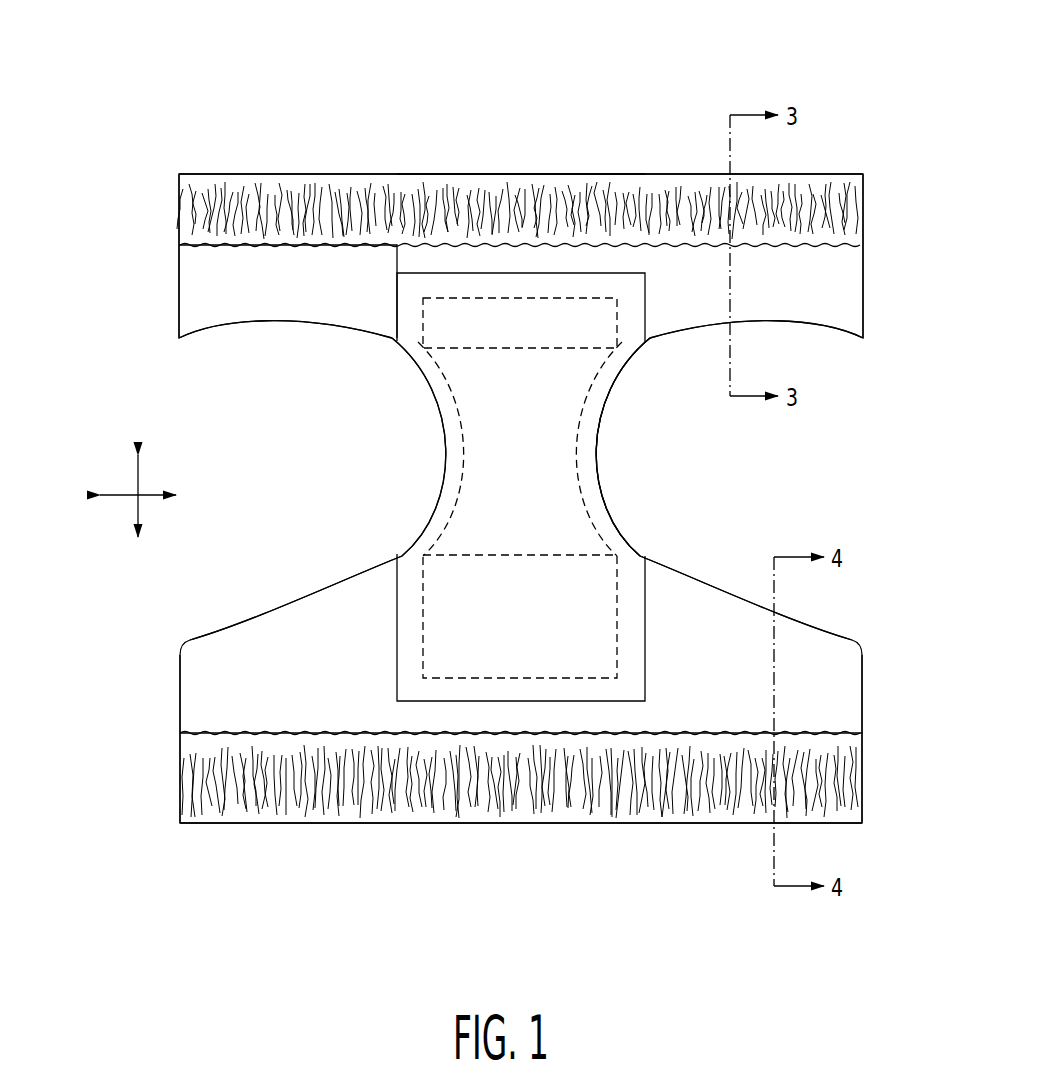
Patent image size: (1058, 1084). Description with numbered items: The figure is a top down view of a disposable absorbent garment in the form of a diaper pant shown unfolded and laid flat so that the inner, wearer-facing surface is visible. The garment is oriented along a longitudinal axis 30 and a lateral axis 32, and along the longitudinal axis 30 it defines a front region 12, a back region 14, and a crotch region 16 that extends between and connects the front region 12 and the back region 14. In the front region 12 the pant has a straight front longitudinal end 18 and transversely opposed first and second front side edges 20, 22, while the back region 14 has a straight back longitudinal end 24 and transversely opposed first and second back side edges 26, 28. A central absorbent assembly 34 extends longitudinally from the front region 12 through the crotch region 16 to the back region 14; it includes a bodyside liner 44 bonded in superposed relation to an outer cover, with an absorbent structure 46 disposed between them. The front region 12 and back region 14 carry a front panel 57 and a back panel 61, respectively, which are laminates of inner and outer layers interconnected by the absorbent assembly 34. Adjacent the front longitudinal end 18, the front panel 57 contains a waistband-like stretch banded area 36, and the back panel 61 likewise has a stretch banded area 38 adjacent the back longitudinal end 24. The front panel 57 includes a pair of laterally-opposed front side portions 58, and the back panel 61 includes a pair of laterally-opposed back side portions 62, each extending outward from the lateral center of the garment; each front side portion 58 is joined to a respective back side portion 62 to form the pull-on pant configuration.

The front region 12 is at (870, 197).
The back region 14 is at (522, 870).
The crotch region 16 is at (648, 492).
The front longitudinal end 18 is at (615, 175).
The first front side edge 20 is at (865, 278).
The second front side edge 22 is at (178, 215).
The back longitudinal end 24 is at (655, 823).
The first back side edge 26 is at (862, 812).
The second back side edge 28 is at (181, 768).
The longitudinal axis 30 is at (143, 515).
The lateral axis 32 is at (158, 490).
The central absorbent assembly 34 is at (540, 395).
The stretch banded area 36 is at (405, 175).
The stretch banded area 38 is at (440, 813).
The bodyside liner 44 is at (598, 540).
The absorbent structure 46 is at (578, 465).
The front panel 57 is at (235, 282).
The front side portions 58 is at (247, 312).
The back panel 61 is at (287, 683).
The back side portions 62 is at (278, 640).